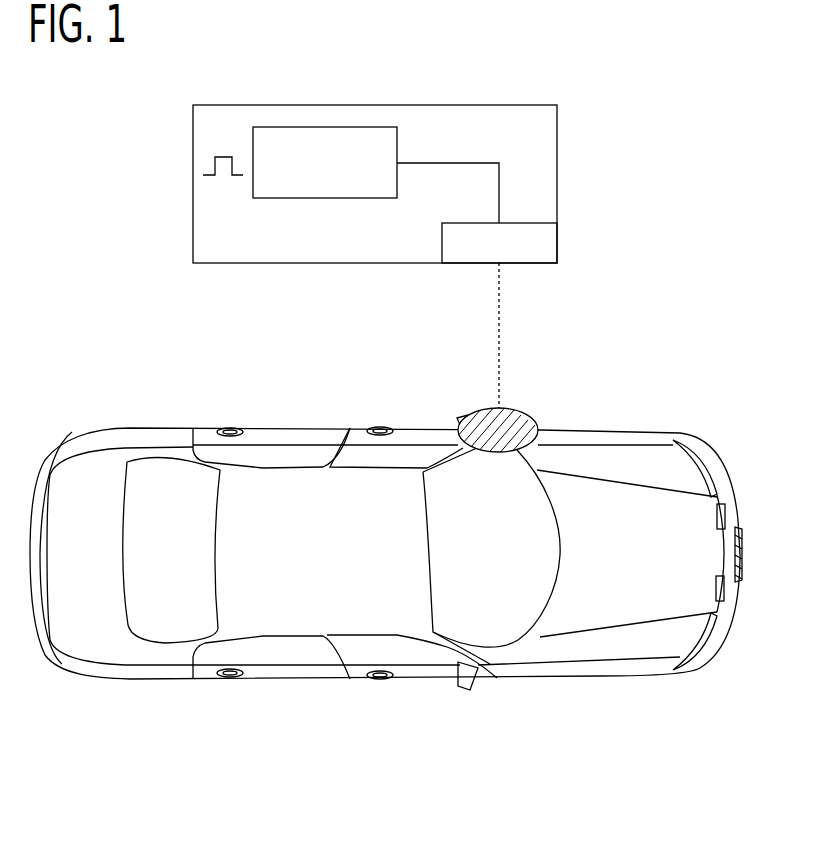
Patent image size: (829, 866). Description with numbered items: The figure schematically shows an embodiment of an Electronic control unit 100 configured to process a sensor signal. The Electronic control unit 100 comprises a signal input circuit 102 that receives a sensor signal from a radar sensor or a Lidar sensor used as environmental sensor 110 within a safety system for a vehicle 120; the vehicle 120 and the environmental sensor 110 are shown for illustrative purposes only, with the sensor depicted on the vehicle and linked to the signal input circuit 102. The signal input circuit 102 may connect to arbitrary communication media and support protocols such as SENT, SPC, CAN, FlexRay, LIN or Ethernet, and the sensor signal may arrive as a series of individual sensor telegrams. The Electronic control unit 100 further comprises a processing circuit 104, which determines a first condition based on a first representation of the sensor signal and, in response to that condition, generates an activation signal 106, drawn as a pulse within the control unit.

The electronic control unit 100 is at (414, 233).
The signal input circuit 102 is at (442, 243).
The processing circuit 104 is at (323, 127).
The activation signal 106 is at (222, 157).
The environmental sensor 110 is at (525, 410).
The vehicle 120 is at (645, 437).